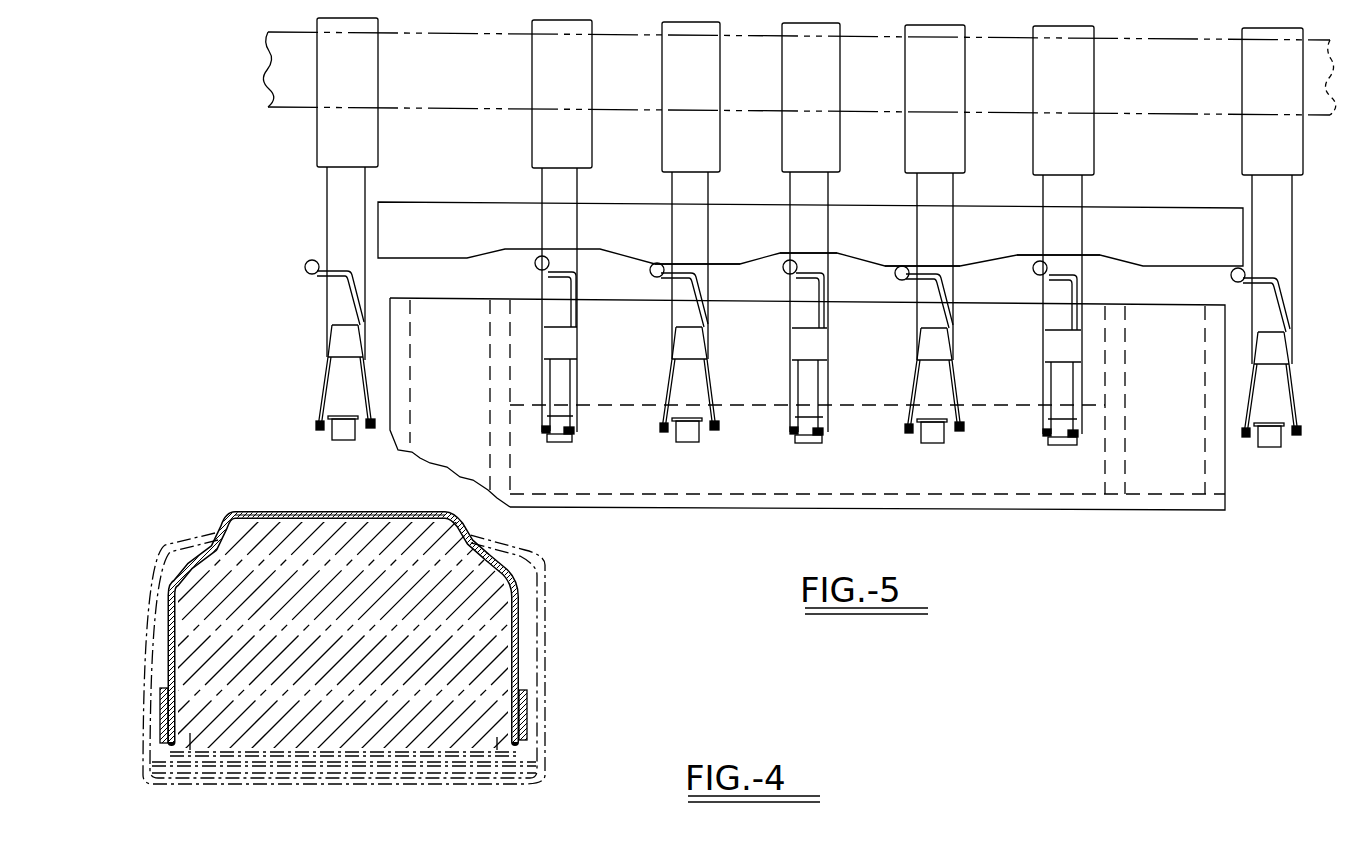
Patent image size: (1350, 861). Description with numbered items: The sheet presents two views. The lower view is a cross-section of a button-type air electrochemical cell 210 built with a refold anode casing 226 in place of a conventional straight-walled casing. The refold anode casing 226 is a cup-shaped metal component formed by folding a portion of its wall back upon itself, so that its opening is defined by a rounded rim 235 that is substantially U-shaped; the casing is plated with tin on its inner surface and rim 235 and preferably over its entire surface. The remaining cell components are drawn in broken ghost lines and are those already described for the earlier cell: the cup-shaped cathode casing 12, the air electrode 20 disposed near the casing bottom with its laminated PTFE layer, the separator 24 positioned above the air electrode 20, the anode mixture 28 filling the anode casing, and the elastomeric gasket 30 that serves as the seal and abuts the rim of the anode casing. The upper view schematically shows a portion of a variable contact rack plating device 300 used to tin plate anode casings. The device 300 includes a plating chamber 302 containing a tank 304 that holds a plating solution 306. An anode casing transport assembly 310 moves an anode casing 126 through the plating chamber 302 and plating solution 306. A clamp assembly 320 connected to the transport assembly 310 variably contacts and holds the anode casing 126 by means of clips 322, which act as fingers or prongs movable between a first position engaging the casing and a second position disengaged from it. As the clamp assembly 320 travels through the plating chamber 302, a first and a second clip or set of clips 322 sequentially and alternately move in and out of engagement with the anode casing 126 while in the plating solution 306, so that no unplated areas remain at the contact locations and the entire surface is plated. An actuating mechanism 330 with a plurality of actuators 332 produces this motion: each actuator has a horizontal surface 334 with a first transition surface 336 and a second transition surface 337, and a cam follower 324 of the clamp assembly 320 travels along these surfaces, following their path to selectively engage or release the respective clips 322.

In FIG. 4, the cathode casing 12 is at (558, 593).
In FIG. 4, the air electrode 20 is at (494, 784).
In FIG. 4, the separator 24 is at (415, 750).
In FIG. 4, the anode mixture 28 is at (361, 671).
In FIG. 4, the gasket 30 is at (530, 633).
In FIG. 5, the anode casing 126 is at (340, 442).
In FIG. 4, the electrochemical cell 210 is at (567, 675).
In FIG. 4, the refold anode casing 226 is at (252, 503).
In FIG. 4, the rounded rim 235 is at (166, 733).
In FIG. 5, the variable contact rack plating device 300 is at (262, 207).
In FIG. 5, the plating chamber 302 is at (1044, 516).
In FIG. 5, the tank 304 is at (930, 500).
In FIG. 5, the plating solution 306 is at (654, 482).
In FIG. 5, the anode casing transport assembly 310 is at (298, 143).
In FIG. 5, the clamp assembly 320 is at (314, 364).
In FIG. 5, the clips 322 is at (316, 427).
In FIG. 5, the cam follower 324 is at (305, 272).
In FIG. 5, the actuating mechanism 330 is at (483, 192).
In FIG. 5, the actuators 332 is at (728, 270).
In FIG. 5, the horizontal surface 334 is at (886, 262).
In FIG. 5, the first transition surface 336 is at (1125, 306).
In FIG. 5, the second transition surface 337 is at (967, 270).